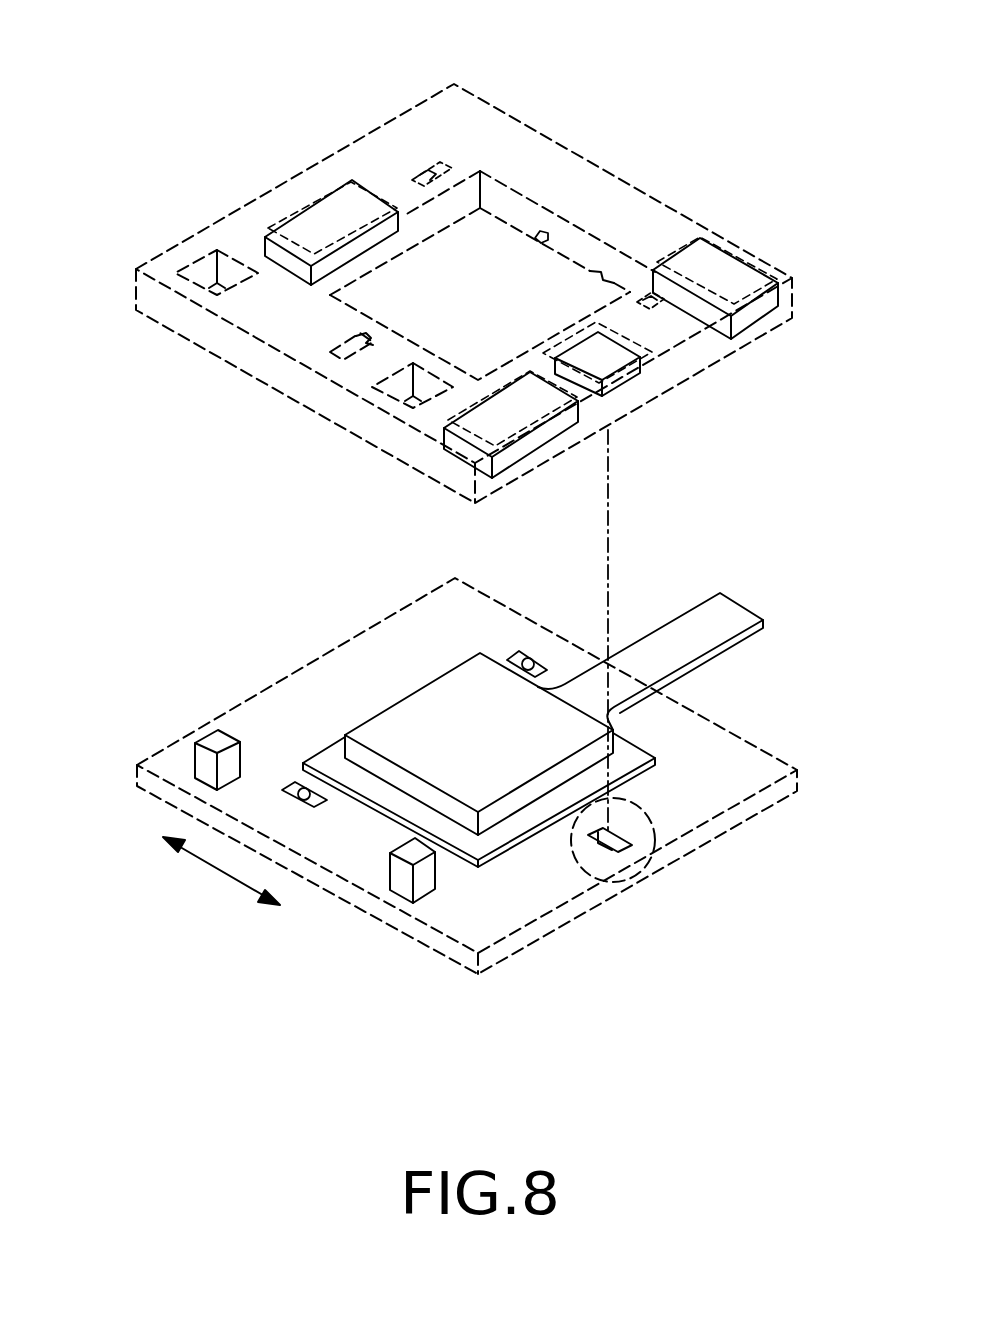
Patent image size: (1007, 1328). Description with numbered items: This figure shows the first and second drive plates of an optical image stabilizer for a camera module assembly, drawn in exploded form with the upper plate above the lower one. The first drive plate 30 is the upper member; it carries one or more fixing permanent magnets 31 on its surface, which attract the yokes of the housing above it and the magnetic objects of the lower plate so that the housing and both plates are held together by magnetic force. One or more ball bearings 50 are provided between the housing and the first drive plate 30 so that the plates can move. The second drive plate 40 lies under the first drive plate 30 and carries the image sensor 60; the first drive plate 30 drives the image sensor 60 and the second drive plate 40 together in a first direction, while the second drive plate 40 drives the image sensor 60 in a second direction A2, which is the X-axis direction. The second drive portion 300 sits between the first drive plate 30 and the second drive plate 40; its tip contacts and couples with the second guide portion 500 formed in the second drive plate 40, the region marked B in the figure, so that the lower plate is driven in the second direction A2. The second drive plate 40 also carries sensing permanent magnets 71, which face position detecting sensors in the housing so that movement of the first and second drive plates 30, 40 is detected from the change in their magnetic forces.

The first drive plate 30 is at (598, 197).
The fixing permanent magnet 31 is at (732, 283).
The second drive portion 300 is at (603, 360).
The ball bearing 50 is at (422, 177).
The second drive plate 40 is at (248, 713).
The image sensor 60 is at (432, 693).
The sensing permanent magnet 71 is at (200, 770).
The second guide portion 500 is at (618, 838).
The detail region B is at (682, 918).
The second direction A2 is at (215, 868).